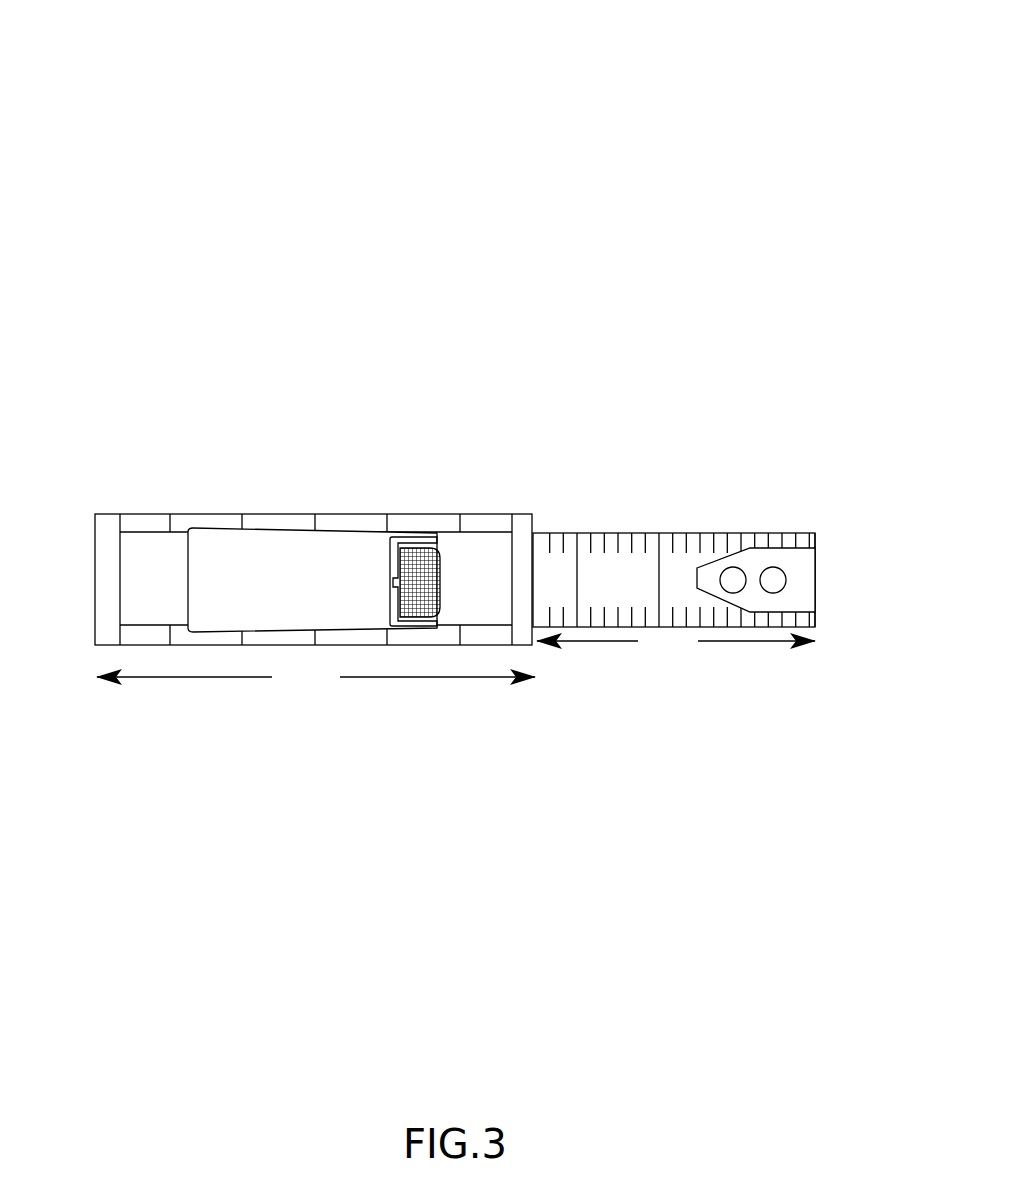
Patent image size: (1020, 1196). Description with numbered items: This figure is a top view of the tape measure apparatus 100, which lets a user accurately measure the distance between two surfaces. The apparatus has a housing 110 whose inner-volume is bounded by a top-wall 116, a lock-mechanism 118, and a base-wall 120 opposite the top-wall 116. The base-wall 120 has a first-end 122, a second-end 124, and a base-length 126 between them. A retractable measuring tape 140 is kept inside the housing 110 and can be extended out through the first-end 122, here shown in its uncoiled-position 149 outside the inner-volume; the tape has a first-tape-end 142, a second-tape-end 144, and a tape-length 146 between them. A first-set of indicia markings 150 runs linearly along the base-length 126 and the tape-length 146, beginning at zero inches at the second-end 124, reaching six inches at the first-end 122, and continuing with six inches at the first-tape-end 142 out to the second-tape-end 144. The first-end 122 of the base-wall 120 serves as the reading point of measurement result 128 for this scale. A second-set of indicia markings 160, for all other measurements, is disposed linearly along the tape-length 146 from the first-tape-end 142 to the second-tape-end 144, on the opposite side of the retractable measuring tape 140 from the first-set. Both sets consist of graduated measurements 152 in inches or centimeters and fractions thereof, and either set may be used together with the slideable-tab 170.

The tape measure apparatus 100 is at (545, 113).
The uncoiled-position 149 is at (581, 141).
The housing 110 is at (151, 583).
The second-end 124 is at (95, 537).
The graduated measurements 152 is at (241, 513).
The base-wall 120 is at (283, 513).
The first-set of indicia markings 150 is at (320, 508).
The top-wall 116 is at (363, 547).
The lock-mechanism 118 is at (423, 577).
The first-end 122 is at (536, 558).
The reading point of measurement result 128 is at (539, 540).
The second-tape-end 144 is at (555, 535).
The retractable measuring tape 140 is at (775, 532).
The first-tape-end 142 is at (807, 532).
The slideable-tab 170 is at (790, 577).
The second-set of indicia markings 160 is at (748, 623).
The base-length 126 is at (316, 676).
The tape-length 146 is at (676, 641).